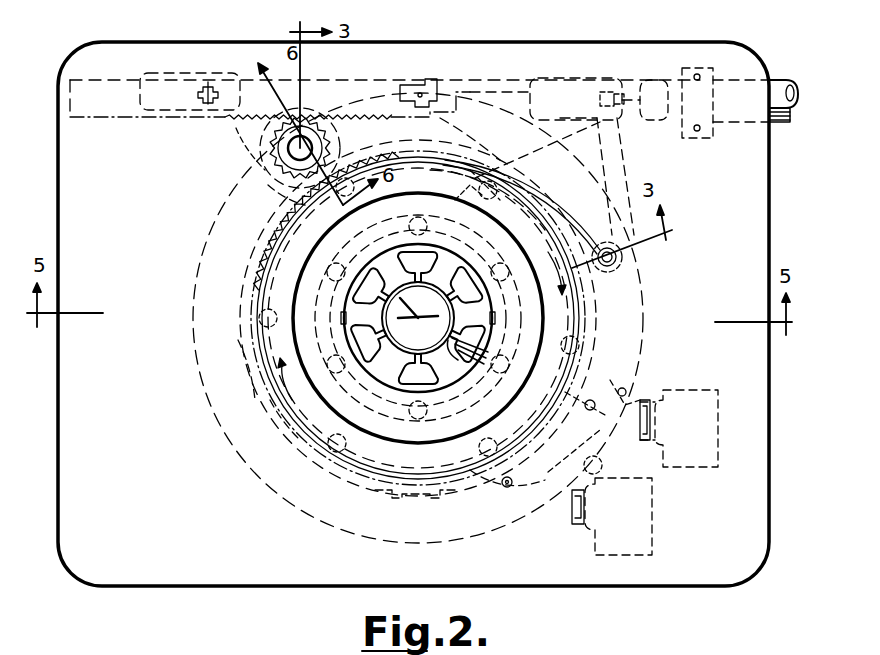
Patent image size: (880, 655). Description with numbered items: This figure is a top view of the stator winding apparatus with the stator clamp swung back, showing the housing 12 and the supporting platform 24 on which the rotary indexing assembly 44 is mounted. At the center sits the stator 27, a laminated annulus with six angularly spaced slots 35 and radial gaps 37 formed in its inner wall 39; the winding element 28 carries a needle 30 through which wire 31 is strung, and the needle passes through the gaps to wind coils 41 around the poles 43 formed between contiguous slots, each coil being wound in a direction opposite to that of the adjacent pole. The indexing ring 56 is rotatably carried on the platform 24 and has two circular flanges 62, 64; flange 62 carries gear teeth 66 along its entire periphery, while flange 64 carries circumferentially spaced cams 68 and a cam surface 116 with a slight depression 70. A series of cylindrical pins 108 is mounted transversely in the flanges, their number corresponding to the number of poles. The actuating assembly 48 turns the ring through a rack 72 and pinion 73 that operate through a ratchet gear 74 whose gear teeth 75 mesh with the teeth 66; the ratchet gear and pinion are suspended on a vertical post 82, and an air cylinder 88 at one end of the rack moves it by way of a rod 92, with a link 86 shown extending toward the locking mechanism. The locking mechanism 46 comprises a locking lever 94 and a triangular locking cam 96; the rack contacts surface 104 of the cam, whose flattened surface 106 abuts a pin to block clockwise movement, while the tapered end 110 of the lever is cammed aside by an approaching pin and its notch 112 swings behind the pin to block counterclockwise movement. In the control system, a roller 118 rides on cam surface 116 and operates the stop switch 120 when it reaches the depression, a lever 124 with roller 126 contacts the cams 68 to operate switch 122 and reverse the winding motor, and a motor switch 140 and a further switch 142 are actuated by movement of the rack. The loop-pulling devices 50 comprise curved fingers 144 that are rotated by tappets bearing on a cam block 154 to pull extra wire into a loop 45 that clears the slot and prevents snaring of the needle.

The housing 12 is at (400, 442).
The supporting platform 24 is at (173, 576).
The stator 27 is at (390, 392).
The winding element 28 is at (383, 318).
The needle 30 is at (475, 340).
The wire 31 is at (480, 352).
The slots 35 is at (418, 318).
The radial gaps 37 is at (460, 284).
The inner wall 39 is at (406, 331).
The coils 41 is at (412, 392).
The poles 43 is at (416, 312).
The rotary indexing assembly 44 is at (285, 428).
The loop 45 is at (432, 386).
The locking mechanism 46 is at (620, 275).
The actuating assembly 48 is at (664, 78).
The loop-pulling devices 50 is at (414, 309).
The indexing ring 56 is at (262, 268).
The circular flange 62 is at (250, 292).
The circular flange 64 is at (242, 345).
The gear teeth 66 is at (266, 222).
The cams 68 is at (268, 240).
The depression 70 is at (478, 505).
The rack 72 is at (236, 128).
The pinion 73 is at (252, 152).
The ratchet gear 74 is at (248, 168).
The gear teeth 75 is at (280, 190).
The vertical post 82 is at (330, 142).
The arm 86 is at (440, 130).
The air cylinder 88 is at (783, 124).
The rod 92 is at (490, 84).
The locking lever 94 is at (470, 180).
The locking cam 96 is at (614, 168).
The surface 104 is at (597, 128).
The flattened surface 106 is at (480, 210).
The cylindrical pins 108 is at (258, 320).
The tapered end 110 is at (458, 170).
The notch 112 is at (490, 172).
The cam surface 116 is at (258, 392).
The roller 118 is at (498, 495).
The stop switch 120 is at (580, 525).
The switch 122 is at (645, 415).
The lever 124 is at (612, 390).
The roller 126 is at (584, 412).
The motor switch 140 is at (160, 72).
The switch 142 is at (548, 78).
The curved fingers 144 is at (290, 284).
The cam block 154 is at (580, 437).